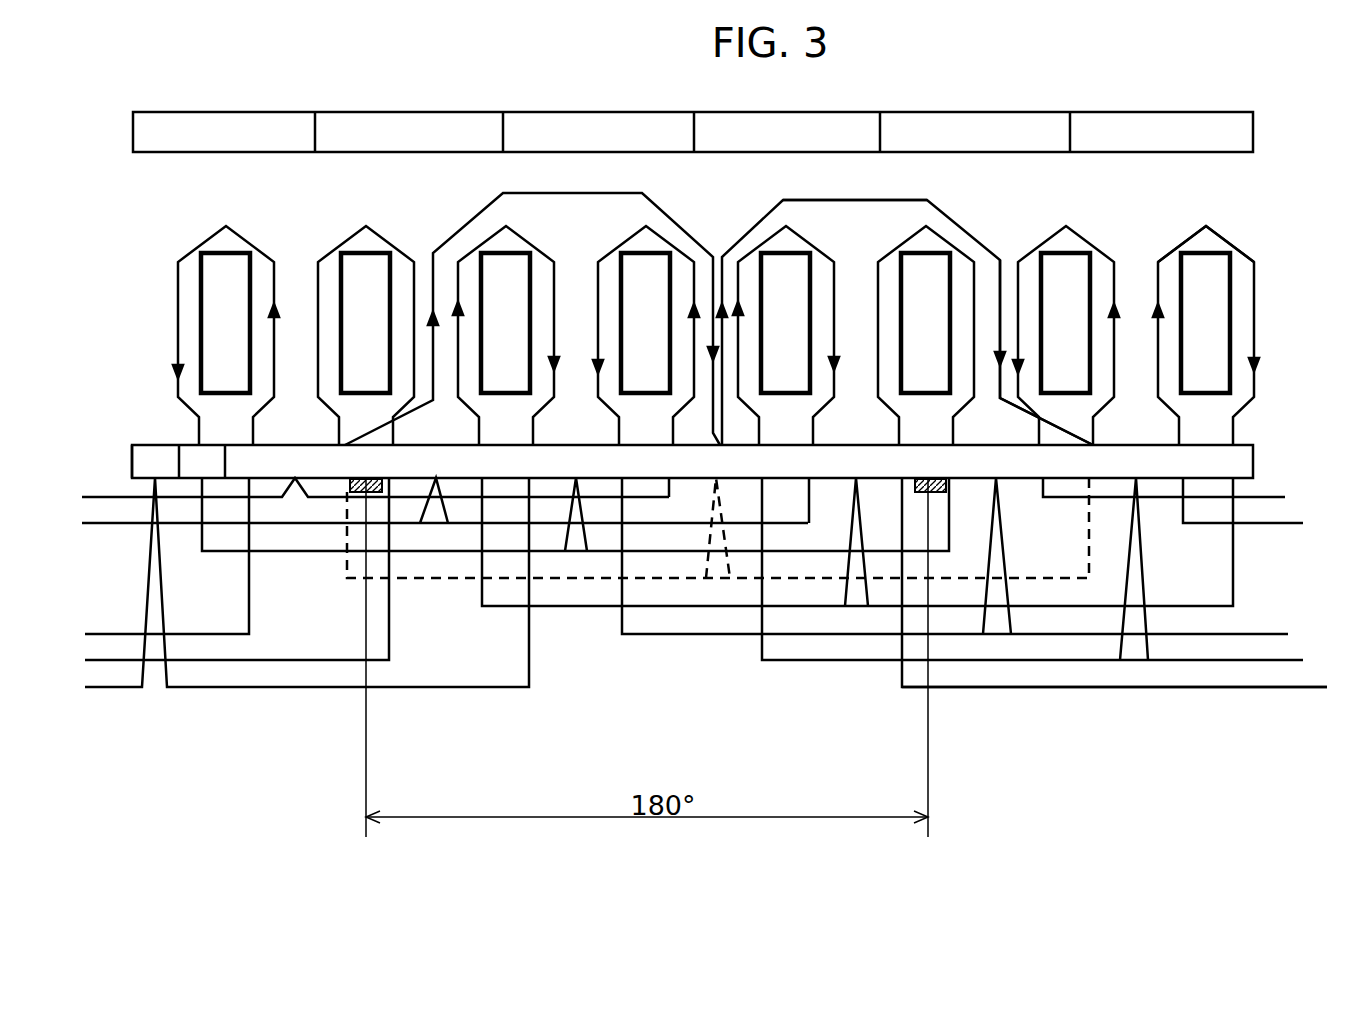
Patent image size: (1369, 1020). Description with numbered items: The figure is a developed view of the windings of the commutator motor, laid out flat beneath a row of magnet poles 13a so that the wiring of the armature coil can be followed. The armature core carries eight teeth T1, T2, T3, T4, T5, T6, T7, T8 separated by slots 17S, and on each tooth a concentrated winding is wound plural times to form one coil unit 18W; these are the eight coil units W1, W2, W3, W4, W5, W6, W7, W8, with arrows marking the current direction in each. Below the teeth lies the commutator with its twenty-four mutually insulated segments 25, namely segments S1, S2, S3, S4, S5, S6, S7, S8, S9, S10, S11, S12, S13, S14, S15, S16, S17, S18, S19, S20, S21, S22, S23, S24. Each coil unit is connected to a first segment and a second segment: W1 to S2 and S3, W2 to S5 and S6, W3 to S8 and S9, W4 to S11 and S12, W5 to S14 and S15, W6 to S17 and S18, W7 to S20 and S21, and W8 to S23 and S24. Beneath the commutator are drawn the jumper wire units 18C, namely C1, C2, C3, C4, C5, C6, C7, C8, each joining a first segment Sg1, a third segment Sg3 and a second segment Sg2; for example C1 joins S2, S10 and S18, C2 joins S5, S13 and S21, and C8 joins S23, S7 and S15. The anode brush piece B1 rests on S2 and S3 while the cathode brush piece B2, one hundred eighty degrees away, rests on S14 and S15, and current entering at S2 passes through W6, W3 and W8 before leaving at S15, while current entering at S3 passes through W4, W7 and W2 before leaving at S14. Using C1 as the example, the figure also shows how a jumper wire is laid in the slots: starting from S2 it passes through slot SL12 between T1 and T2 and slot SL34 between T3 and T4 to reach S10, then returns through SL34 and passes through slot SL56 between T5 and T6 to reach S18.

The permanent magnet 13a is at (1253, 123).
The coil unit 18W is at (1230, 237).
The slots 17S is at (300, 327).
The segments 25 is at (725, 408).
The jumper wire units 18C is at (1257, 687).
The coil unit W1 is at (333, 245).
The coil unit W2 is at (472, 250).
The coil unit W3 is at (620, 243).
The coil unit W4 is at (765, 243).
The coil unit W5 is at (900, 242).
The coil unit W6 is at (1078, 237).
The coil unit W7 is at (1182, 240).
The coil unit W8 is at (197, 240).
The slot SL12 is at (423, 317).
The slot SL34 is at (717, 267).
The slot SL56 is at (1012, 312).
The jumper wire unit C1 is at (890, 200).
The jumper wire unit C2 is at (595, 606).
The jumper wire unit C3 is at (693, 634).
The jumper wire unit C4 is at (843, 660).
The jumper wire unit C5 is at (988, 687).
The jumper wire unit C6 is at (1265, 497).
The jumper wire unit C7 is at (1280, 525).
The jumper wire unit C8 is at (320, 551).
The anode brush piece B1 is at (350, 495).
The cathode brush piece B2 is at (946, 492).
The first segment Sg1 is at (190, 443).
The second segment Sg2 is at (260, 443).
The third segment Sg3 is at (158, 443).
The tooth T1 is at (365, 323).
The tooth T2 is at (505, 323).
The tooth T3 is at (645, 323).
The tooth T4 is at (785, 323).
The tooth T5 is at (925, 323).
The tooth T6 is at (1065, 323).
The tooth T7 is at (1205, 323).
The tooth T8 is at (225, 323).
The segment S1 is at (295, 461).
The segment S2 is at (342, 461).
The segment S3 is at (389, 461).
The segment S4 is at (435, 461).
The segment S5 is at (482, 461).
The segment S6 is at (529, 461).
The segment S7 is at (575, 461).
The segment S8 is at (622, 461).
The segment S9 is at (669, 461).
The segment S10 is at (715, 461).
The segment S11 is at (762, 461).
The segment S12 is at (809, 461).
The segment S13 is at (856, 461).
The segment S14 is at (902, 461).
The segment S15 is at (949, 461).
The segment S16 is at (996, 461).
The segment S17 is at (1042, 461).
The segment S18 is at (1089, 461).
The segment S19 is at (1136, 461).
The segment S20 is at (1182, 461).
The segment S21 is at (1229, 461).
The segment S22 is at (155, 461).
The segment S23 is at (202, 461).
The segment S24 is at (248, 461).